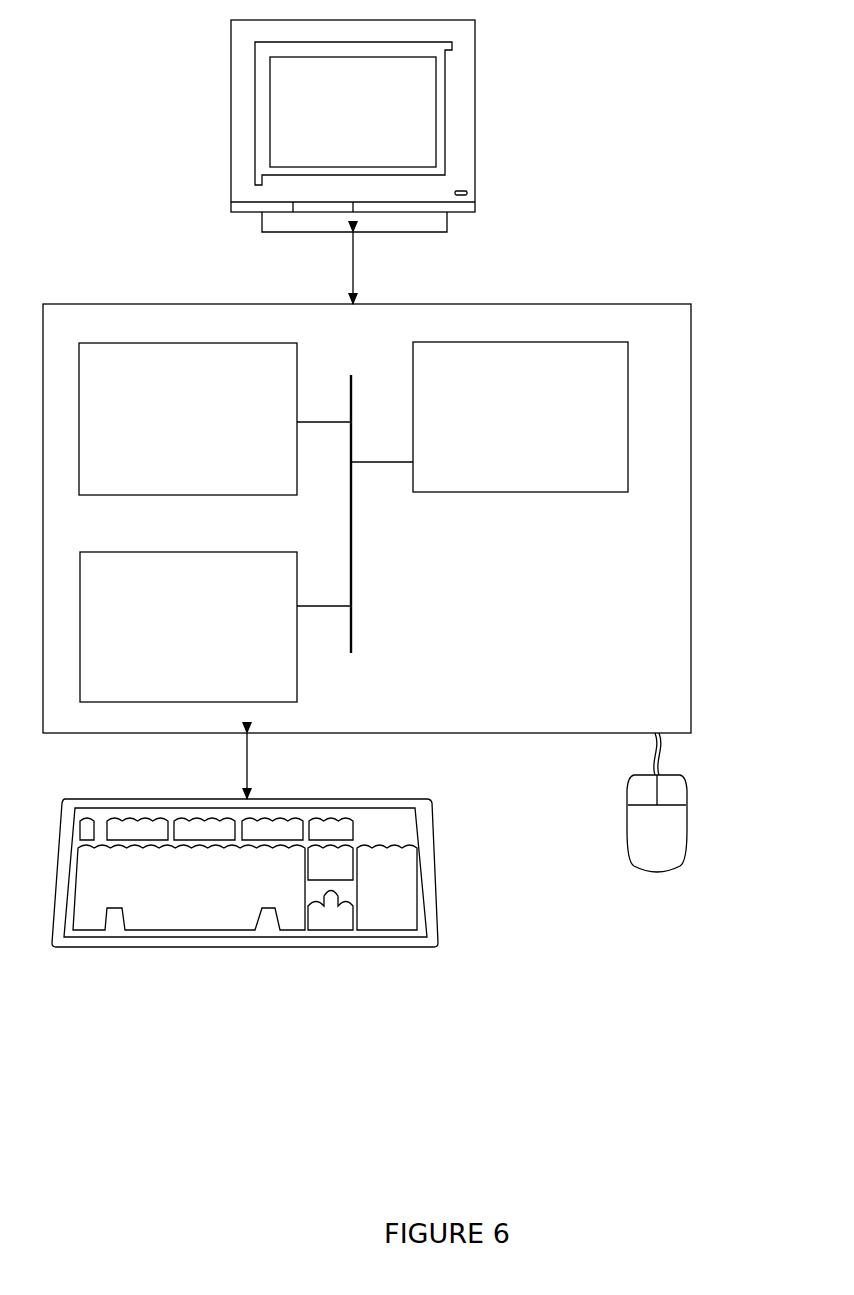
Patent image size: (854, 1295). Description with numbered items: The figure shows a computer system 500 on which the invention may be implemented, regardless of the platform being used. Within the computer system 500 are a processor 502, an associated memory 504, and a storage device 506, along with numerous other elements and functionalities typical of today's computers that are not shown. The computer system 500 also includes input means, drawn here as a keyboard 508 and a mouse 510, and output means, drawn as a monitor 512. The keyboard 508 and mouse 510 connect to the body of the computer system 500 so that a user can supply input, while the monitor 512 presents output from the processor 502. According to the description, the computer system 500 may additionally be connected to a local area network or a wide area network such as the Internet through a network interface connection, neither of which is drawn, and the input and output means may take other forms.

The computer system 500 is at (668, 180).
The processor 502 is at (520, 417).
The memory 504 is at (188, 419).
The storage device 506 is at (188, 627).
The keyboard 508 is at (245, 873).
The mouse 510 is at (657, 802).
The monitor 512 is at (353, 126).